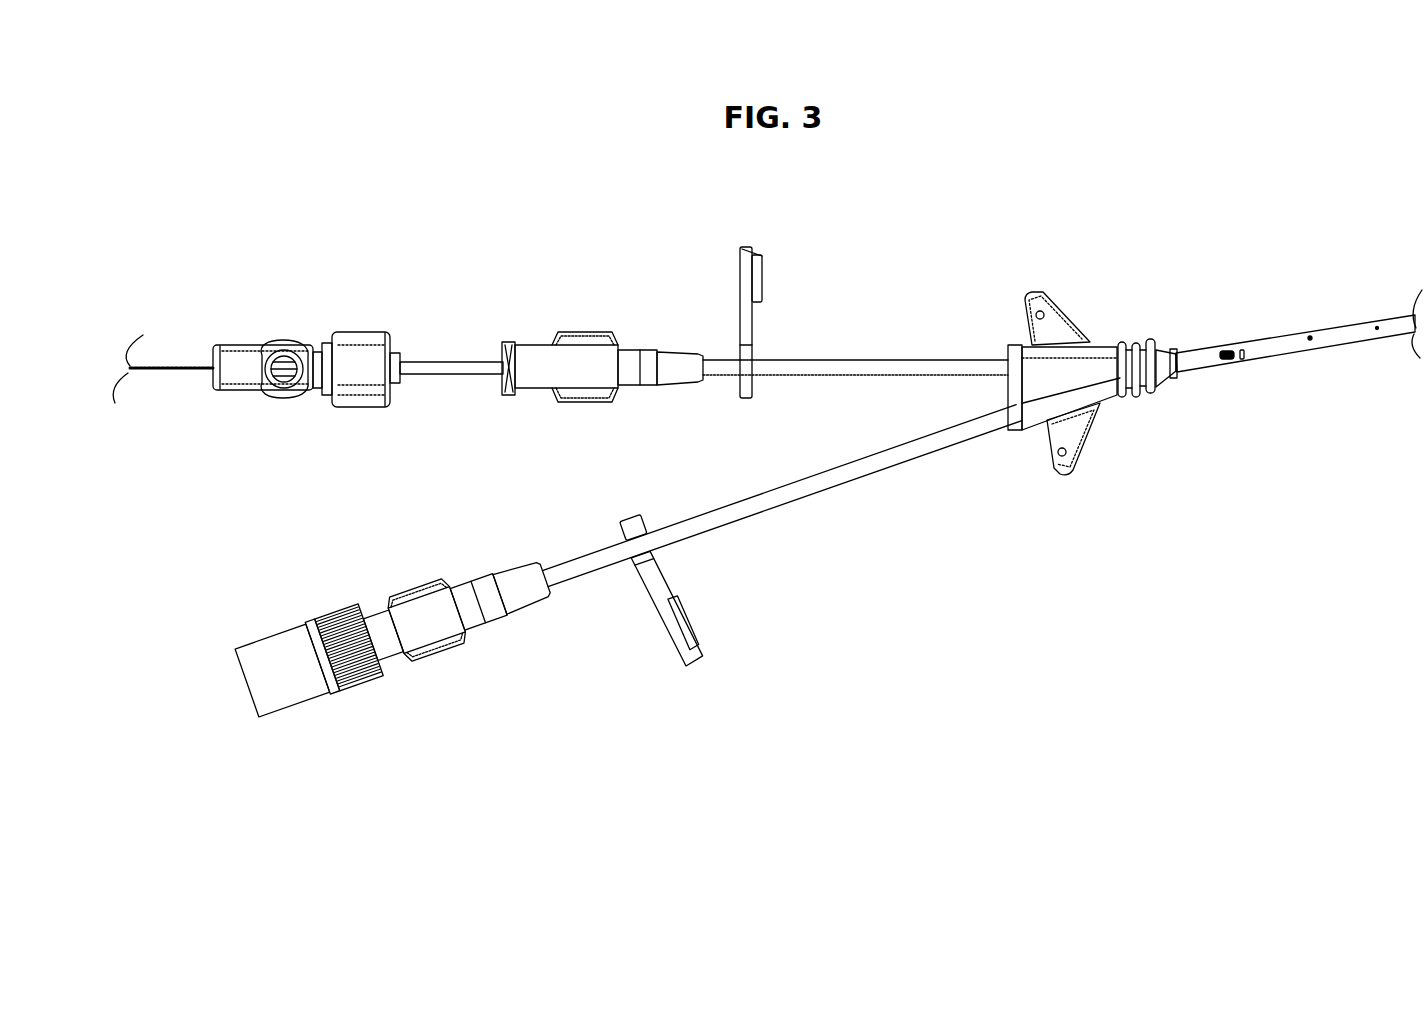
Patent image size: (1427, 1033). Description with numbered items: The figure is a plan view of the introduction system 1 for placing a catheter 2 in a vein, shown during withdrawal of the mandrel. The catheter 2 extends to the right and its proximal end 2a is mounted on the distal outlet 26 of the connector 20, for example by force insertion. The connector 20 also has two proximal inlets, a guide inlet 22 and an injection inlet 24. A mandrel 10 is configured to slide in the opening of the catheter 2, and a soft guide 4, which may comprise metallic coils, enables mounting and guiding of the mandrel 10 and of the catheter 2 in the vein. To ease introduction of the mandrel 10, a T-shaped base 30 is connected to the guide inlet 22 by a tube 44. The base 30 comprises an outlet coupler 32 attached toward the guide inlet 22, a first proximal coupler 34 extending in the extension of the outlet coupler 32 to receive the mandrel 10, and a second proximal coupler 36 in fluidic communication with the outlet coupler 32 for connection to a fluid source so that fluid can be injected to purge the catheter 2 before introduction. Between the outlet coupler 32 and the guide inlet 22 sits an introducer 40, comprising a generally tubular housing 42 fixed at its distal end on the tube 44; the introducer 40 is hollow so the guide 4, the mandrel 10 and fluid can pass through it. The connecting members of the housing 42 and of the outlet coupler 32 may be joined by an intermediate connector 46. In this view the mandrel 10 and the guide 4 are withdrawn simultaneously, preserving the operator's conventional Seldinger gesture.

The introduction system 1 is at (346, 226).
The catheter 2 is at (1285, 345).
The proximal end 2a is at (1190, 367).
The soft guide 4 is at (172, 358).
The mandrel 10 is at (440, 368).
The connector 20 is at (1088, 378).
The guide inlet 22 is at (1020, 352).
The injection inlet 24 is at (1035, 422).
The distal outlet 26 is at (1162, 355).
The base 30 is at (362, 360).
The outlet coupler 32 is at (407, 377).
The first proximal coupler 34 is at (242, 368).
The second proximal coupler 36 is at (285, 345).
The introducer 40 is at (602, 310).
The housing 42 is at (580, 372).
The tube 44 is at (875, 365).
The intermediate connector 46 is at (360, 402).